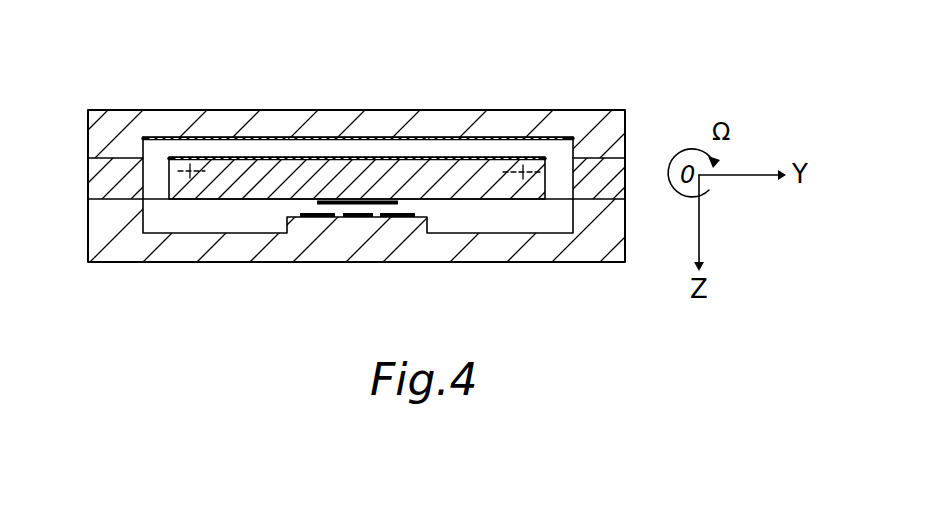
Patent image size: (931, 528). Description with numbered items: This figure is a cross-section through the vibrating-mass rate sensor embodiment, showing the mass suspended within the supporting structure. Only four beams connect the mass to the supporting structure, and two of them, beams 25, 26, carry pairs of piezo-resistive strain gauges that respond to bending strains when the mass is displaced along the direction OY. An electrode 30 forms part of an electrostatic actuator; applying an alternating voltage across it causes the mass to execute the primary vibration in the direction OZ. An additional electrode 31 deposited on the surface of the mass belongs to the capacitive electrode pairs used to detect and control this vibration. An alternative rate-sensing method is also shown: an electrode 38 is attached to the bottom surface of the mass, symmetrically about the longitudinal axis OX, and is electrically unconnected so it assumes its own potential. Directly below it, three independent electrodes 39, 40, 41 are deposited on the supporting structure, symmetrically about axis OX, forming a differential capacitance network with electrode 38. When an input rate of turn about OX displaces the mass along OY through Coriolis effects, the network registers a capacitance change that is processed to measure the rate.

The beam 25 is at (190, 178).
The beam 26 is at (523, 179).
The electrode 30 is at (168, 140).
The electrode 31 is at (252, 157).
The electrode 38 is at (320, 201).
The electrode 39 is at (310, 217).
The electrode 40 is at (362, 217).
The electrode 41 is at (405, 217).